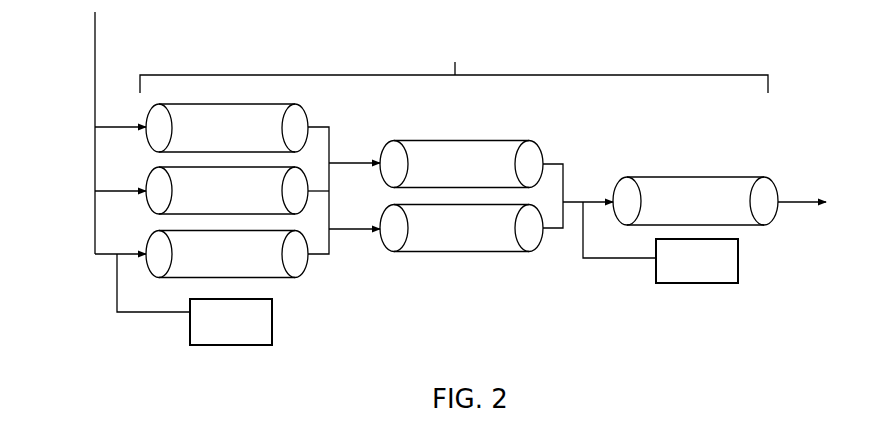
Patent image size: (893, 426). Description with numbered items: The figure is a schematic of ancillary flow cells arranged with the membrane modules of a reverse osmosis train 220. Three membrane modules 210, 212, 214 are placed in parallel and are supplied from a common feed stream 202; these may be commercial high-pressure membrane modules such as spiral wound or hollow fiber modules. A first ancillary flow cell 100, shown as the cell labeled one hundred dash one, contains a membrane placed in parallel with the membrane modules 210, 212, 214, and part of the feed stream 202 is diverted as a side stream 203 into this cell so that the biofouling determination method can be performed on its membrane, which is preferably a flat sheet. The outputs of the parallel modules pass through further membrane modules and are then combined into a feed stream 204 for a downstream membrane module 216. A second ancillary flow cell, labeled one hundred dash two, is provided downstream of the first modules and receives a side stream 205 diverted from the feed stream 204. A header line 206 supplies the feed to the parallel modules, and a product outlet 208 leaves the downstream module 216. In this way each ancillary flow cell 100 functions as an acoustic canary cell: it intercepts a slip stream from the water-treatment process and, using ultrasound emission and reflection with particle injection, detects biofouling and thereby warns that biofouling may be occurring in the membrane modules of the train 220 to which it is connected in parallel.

The flow cell 100 is at (232, 333).
The feed stream 202 is at (94, 140).
The side stream 203 is at (155, 313).
The feed stream 204 is at (578, 201).
The side stream 205 is at (610, 258).
The feed header line 206 is at (97, 30).
The product outlet 208 is at (784, 201).
The membrane module 210 is at (227, 254).
The membrane module 212 is at (227, 190).
The membrane module 214 is at (227, 128).
The downstream membrane module 216 is at (695, 201).
The RO train 220 is at (454, 62).